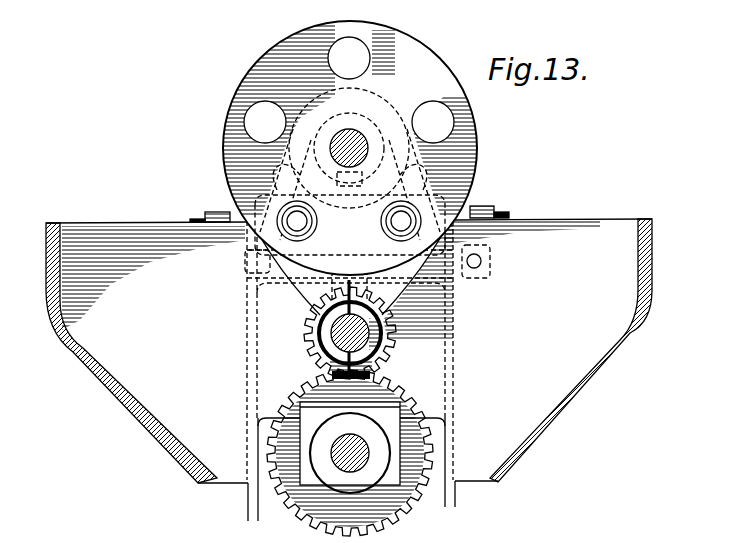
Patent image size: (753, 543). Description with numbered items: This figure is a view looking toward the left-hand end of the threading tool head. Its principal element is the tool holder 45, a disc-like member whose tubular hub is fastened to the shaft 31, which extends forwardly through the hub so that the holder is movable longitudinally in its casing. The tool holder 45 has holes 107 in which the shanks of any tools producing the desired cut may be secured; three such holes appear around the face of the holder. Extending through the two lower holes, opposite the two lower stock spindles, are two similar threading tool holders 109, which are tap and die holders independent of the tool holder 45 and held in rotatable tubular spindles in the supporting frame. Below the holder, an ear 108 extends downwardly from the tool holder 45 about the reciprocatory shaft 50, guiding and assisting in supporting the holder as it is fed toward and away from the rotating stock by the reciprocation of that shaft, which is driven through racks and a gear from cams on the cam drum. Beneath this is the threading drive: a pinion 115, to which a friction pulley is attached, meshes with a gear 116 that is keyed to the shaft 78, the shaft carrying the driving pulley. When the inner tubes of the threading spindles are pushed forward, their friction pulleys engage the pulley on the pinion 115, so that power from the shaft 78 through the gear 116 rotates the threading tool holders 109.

The tool holder 45 is at (351, 147).
The holes 107 is at (349, 90).
The shaft 31 is at (361, 131).
The threading tool holders 109 is at (419, 208).
The ear 108 is at (392, 290).
The reciprocatory shaft 50 is at (322, 339).
The pinion 115 is at (380, 345).
The shaft 78 is at (370, 452).
The gear 116 is at (350, 453).